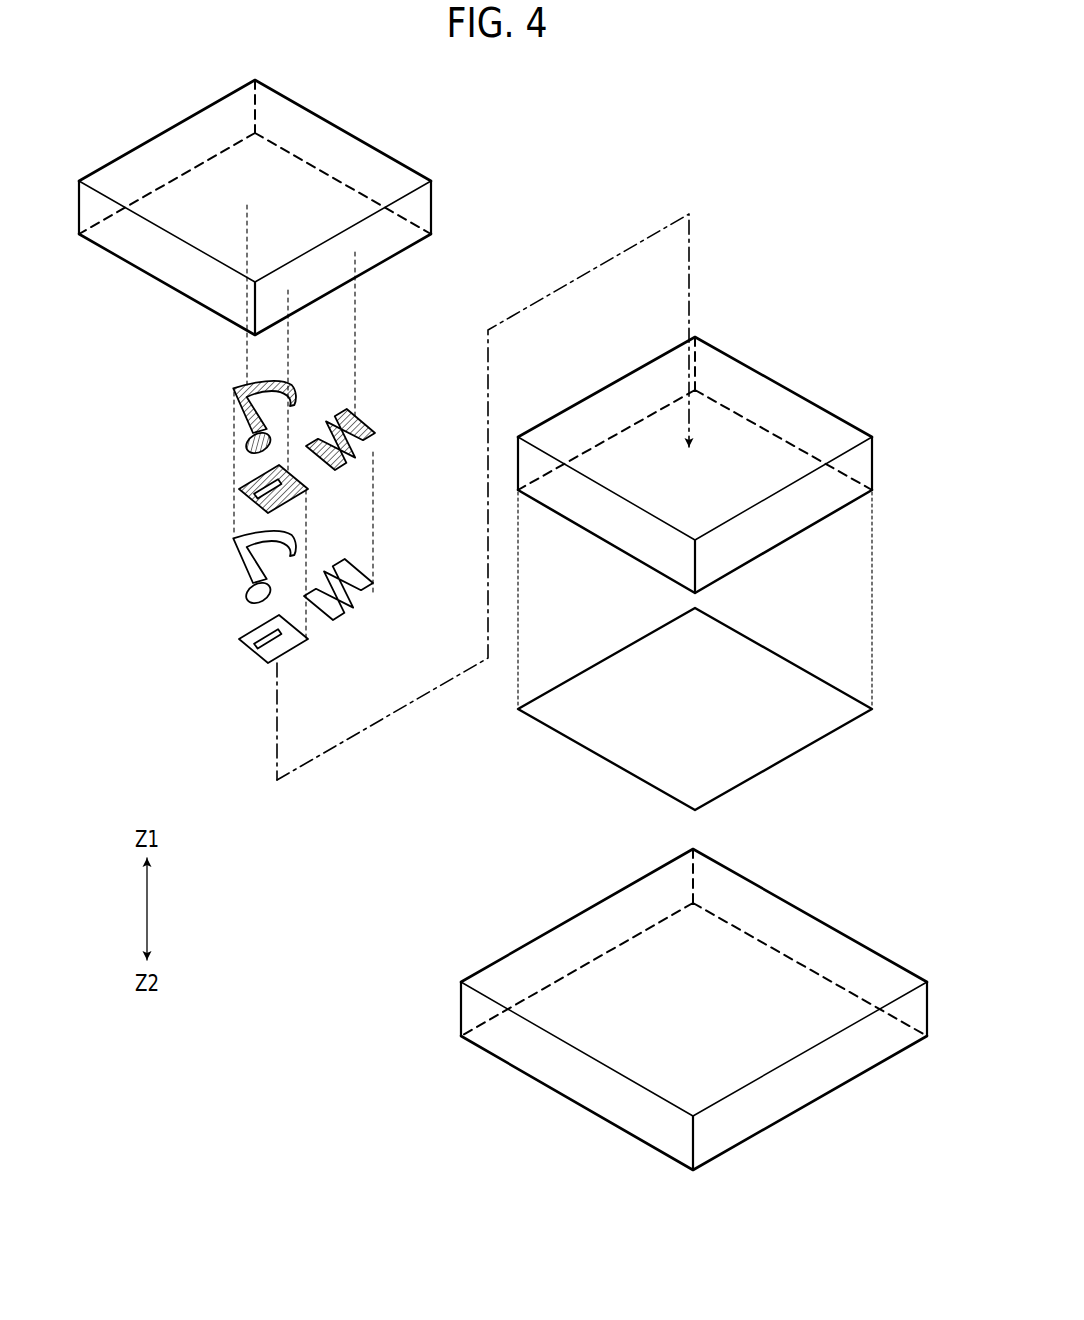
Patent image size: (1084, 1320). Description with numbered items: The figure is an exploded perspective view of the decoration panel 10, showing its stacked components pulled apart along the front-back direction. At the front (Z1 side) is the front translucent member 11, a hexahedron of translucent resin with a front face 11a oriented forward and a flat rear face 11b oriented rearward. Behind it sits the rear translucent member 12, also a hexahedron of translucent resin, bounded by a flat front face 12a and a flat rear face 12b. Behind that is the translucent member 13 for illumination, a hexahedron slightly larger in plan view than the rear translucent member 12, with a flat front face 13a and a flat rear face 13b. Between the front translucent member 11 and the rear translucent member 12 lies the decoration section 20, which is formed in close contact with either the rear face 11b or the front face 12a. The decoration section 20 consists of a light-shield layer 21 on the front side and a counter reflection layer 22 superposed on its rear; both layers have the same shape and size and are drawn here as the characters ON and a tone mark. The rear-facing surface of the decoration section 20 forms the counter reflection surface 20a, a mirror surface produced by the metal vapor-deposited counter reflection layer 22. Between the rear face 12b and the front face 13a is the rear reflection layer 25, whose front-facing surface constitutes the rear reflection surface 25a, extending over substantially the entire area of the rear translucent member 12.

The decoration panel 10 is at (332, 1012).
The front translucent member 11 is at (254, 205).
The front face 11a is at (303, 137).
The rear face 11b is at (170, 290).
The rear translucent member 12 is at (695, 465).
The front face 12a is at (637, 483).
The rear face 12b is at (795, 537).
The translucent member for illumination 13 is at (694, 1045).
The front face 13a is at (797, 924).
The rear face 13b is at (645, 1149).
The decoration section 20 is at (193, 383).
The counter reflection surface 20a is at (344, 618).
The light-shield layer 21 is at (275, 382).
The counter reflection layer 22 is at (253, 562).
The rear reflection layer 25 is at (707, 709).
The rear reflection surface 25a is at (611, 737).